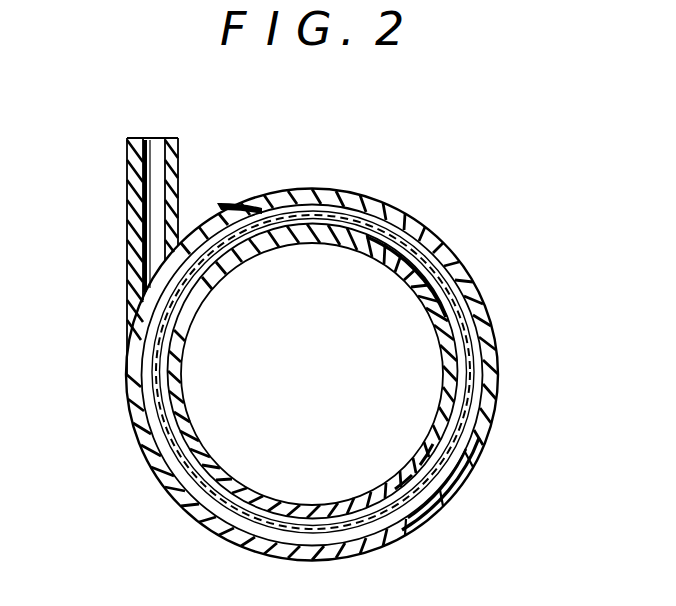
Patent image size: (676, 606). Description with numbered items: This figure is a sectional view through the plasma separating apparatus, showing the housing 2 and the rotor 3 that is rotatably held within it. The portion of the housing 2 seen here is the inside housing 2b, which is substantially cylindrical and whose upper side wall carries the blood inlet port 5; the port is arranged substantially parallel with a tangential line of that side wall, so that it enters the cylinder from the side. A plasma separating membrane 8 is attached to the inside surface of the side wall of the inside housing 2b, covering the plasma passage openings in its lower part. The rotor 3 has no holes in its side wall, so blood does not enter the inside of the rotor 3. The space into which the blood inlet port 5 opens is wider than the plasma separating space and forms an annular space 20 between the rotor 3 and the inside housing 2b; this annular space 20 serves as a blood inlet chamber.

The housing 2 is at (148, 479).
The inside housing 2b is at (496, 390).
The rotor 3 is at (452, 348).
The blood inlet port 5 is at (150, 148).
The plasma separating membrane 8 is at (157, 382).
The annular space 20 is at (447, 475).